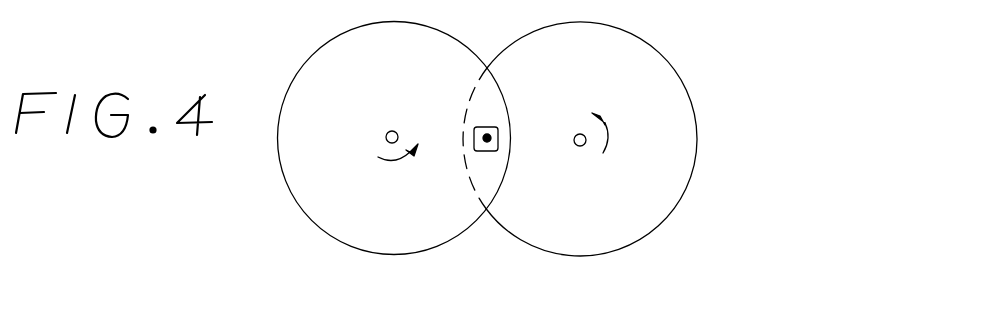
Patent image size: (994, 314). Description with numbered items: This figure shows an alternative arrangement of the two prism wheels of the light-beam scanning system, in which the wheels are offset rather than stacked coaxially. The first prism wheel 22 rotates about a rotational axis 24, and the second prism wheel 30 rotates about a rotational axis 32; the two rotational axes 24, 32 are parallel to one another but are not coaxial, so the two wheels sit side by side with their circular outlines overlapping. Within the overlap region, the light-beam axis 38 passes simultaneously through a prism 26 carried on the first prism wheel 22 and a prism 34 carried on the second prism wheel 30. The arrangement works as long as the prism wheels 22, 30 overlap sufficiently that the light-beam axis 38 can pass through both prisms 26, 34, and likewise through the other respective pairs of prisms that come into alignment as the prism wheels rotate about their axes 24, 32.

The prism wheel 22 is at (300, 60).
The rotational axis 24 is at (388, 133).
The prism 26 is at (490, 127).
The prism wheel 30 is at (667, 57).
The rotational axis 32 is at (582, 146).
The prism 34 is at (473, 133).
The light-beam axis 38 is at (488, 152).